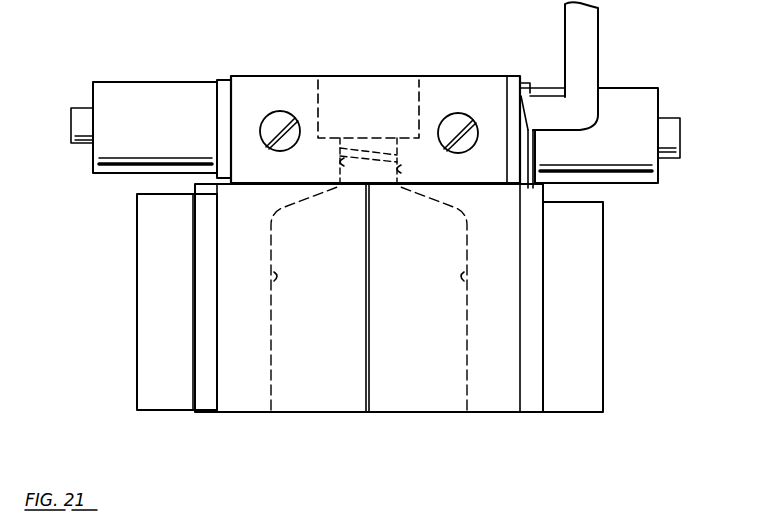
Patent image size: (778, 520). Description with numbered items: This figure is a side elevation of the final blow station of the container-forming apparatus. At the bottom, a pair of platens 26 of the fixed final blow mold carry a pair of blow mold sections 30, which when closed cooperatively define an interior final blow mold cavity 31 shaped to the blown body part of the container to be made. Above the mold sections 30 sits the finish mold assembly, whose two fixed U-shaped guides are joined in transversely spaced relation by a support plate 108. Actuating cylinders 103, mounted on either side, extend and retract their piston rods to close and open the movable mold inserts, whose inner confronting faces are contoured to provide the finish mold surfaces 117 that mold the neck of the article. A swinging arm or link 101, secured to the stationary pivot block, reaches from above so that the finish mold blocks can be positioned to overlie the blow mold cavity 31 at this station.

The swinging arms or links 101 is at (592, 25).
The actuating cylinders 103 is at (100, 88).
The support plate 108 is at (480, 88).
The finish mold surfaces 117 is at (337, 168).
The platens 26 is at (202, 373).
The blow mold sections 30 is at (240, 330).
The final blow mold cavity 31 is at (272, 277).